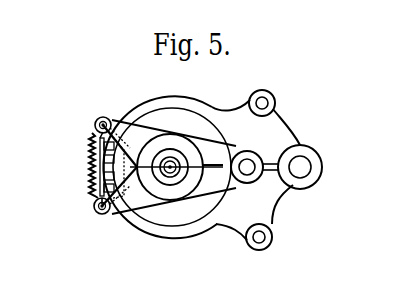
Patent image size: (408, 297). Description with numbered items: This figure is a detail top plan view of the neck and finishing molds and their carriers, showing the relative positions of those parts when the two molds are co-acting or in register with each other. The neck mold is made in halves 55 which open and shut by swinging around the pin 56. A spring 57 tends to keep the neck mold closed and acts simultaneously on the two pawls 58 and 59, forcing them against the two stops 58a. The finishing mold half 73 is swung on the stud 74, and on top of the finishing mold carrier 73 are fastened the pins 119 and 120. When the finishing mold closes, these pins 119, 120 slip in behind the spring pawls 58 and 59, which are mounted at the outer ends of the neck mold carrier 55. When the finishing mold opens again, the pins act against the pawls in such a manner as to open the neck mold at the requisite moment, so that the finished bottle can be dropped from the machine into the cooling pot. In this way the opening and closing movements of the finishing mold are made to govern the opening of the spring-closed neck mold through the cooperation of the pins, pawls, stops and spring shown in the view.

The neck mold halves 55 is at (172, 143).
The pin 56 is at (247, 160).
The spring 57 is at (89, 170).
The pawl 58 is at (96, 131).
The stop 58a is at (108, 118).
The pawl 59 is at (95, 208).
The finishing mold half 73 is at (204, 108).
The stud 74 is at (300, 163).
The pin 119 is at (114, 118).
The pin 120 is at (116, 214).